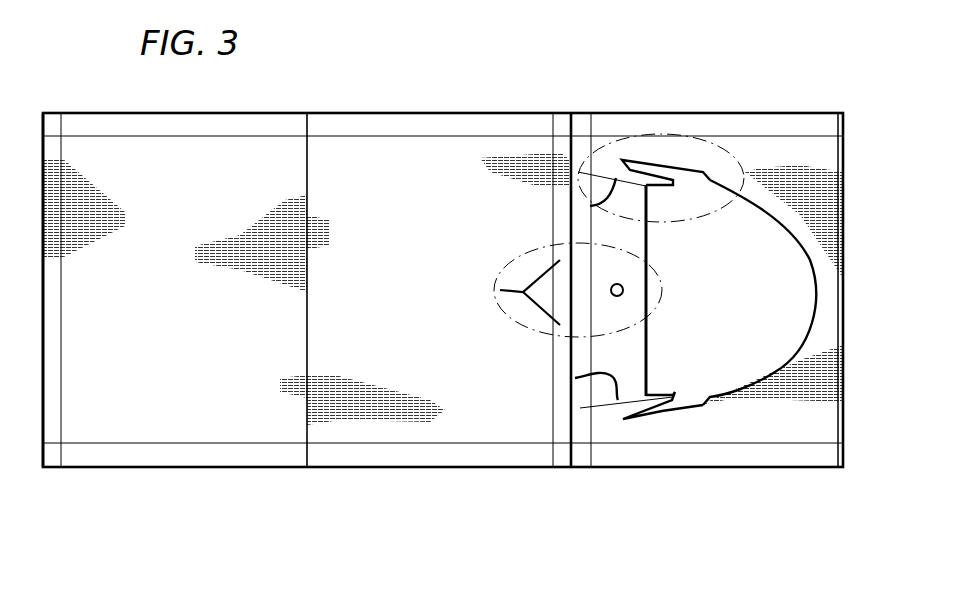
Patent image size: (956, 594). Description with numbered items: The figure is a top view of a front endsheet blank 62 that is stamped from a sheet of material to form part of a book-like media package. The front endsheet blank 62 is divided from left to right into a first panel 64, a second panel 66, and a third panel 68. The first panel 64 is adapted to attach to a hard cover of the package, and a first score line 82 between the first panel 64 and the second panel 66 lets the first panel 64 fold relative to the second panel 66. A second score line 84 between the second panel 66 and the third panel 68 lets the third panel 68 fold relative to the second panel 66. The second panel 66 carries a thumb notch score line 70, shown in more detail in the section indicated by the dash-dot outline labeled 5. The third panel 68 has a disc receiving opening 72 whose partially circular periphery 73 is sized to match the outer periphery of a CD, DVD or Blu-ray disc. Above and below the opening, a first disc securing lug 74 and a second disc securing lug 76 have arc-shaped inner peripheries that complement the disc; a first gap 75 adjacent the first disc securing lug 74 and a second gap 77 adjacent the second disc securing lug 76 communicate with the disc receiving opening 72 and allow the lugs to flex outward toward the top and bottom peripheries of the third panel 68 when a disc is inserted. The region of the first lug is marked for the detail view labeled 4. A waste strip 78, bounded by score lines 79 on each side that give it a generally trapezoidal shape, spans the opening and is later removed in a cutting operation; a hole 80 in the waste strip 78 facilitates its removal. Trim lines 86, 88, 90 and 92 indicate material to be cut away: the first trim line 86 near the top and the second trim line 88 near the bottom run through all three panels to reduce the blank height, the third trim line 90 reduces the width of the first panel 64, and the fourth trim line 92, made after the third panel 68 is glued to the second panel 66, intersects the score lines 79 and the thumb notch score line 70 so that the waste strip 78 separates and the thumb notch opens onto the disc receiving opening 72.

The section view FIG. 4 location 4 is at (672, 132).
The section view FIG. 5 location 5 is at (530, 247).
The front endsheet blank 62 is at (332, 508).
The first panel 64 is at (125, 418).
The second panel 66 is at (473, 398).
The third panel 68 is at (783, 418).
The thumb notch score line 70 is at (500, 290).
The disc receiving opening 72 is at (760, 264).
The partially circular periphery 73 is at (808, 285).
The first disc securing lug 74 is at (672, 187).
The first gap 75 is at (656, 163).
The second disc securing lug 76 is at (670, 392).
The second gap 77 is at (664, 414).
The waste strip 78 is at (648, 240).
The score lines 79 is at (590, 206).
The hole 80 is at (623, 290).
The first score line 82 is at (307, 406).
The second score line 84 is at (571, 432).
The first trim line 86 is at (165, 137).
The second trim line 88 is at (417, 444).
The third trim line 90 is at (62, 331).
The fourth trim line 92 is at (553, 128).